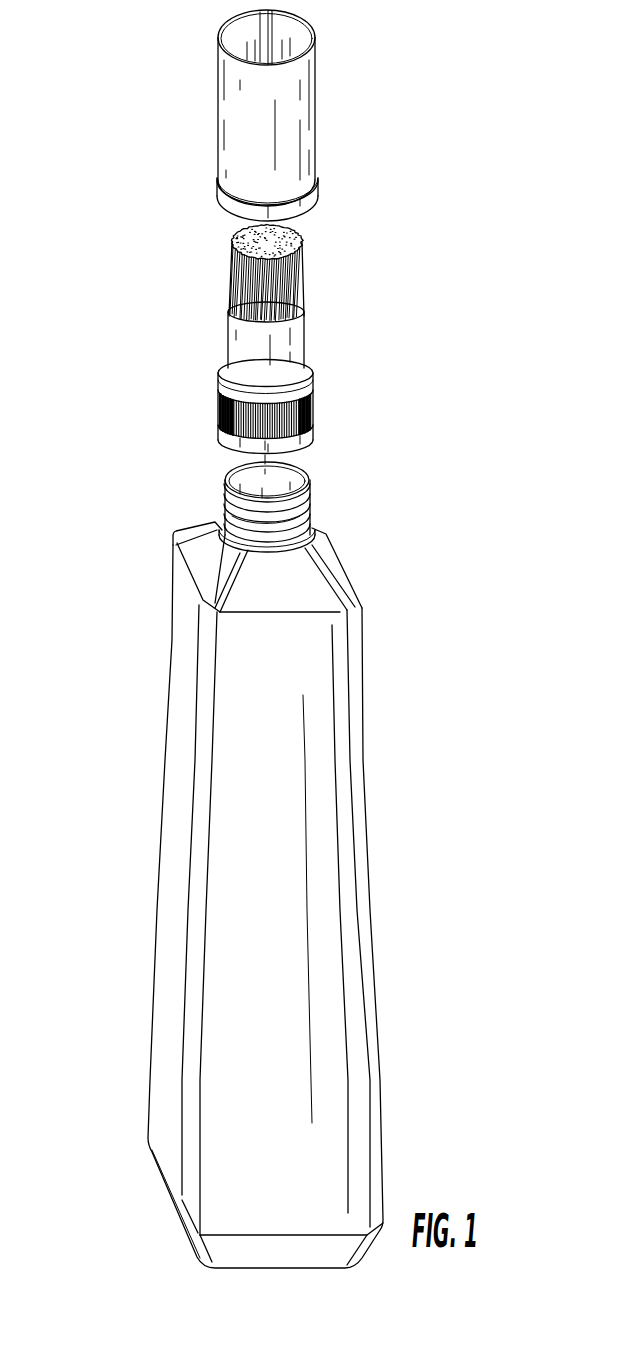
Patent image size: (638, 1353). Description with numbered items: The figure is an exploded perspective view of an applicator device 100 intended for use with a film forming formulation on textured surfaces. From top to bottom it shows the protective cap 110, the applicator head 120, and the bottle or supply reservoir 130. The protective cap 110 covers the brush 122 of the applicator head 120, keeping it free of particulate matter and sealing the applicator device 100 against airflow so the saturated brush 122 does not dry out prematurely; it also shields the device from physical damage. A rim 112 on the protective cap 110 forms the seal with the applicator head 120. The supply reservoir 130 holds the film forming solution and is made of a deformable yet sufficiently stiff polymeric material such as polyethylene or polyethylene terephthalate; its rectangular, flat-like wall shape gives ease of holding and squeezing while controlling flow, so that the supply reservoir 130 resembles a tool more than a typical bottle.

The applicator device 100 is at (105, 348).
The protective cap 110 is at (322, 137).
The rim 112 is at (308, 202).
The applicator head 120 is at (333, 362).
The brush 122 is at (289, 289).
The supply reservoir 130 is at (377, 669).